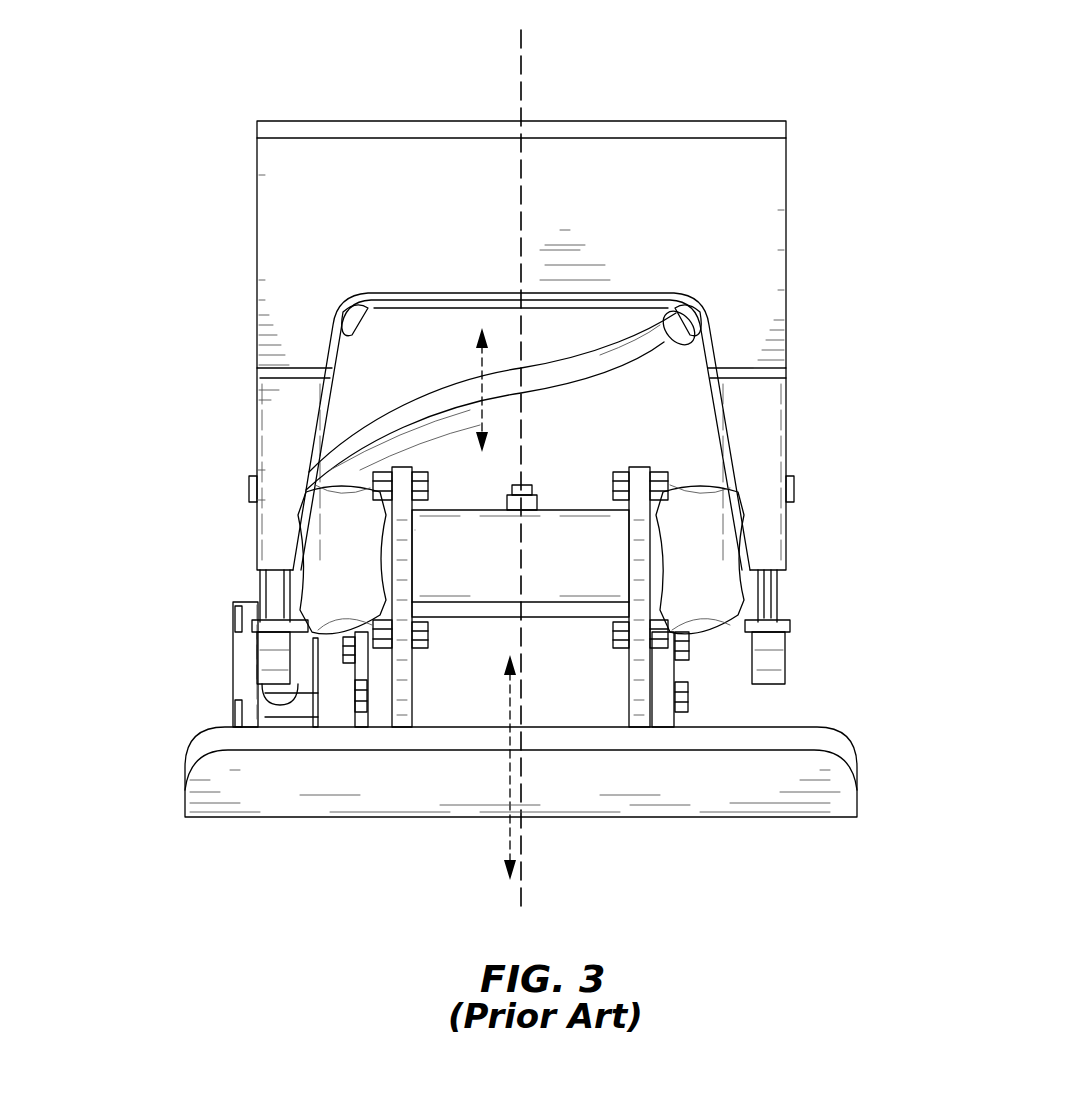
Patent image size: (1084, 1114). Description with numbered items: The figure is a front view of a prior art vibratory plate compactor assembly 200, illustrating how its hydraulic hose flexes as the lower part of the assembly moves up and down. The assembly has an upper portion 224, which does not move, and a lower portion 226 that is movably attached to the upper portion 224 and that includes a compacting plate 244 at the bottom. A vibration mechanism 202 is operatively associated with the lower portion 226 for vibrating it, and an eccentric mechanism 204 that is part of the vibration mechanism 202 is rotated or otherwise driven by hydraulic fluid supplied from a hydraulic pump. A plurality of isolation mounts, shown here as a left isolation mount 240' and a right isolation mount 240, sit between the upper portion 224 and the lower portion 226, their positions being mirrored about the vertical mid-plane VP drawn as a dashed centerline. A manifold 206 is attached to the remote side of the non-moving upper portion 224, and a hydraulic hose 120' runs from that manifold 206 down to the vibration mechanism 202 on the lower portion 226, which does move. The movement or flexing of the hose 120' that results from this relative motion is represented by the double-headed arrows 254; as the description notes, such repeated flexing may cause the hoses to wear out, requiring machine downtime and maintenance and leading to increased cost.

The vertical mid-plane VP is at (521, 63).
The upper portion 224 is at (786, 181).
The vibratory plate compactor assembly 200 is at (786, 321).
The manifold 206 is at (608, 306).
The hydraulic hose 120' is at (503, 397).
The arrows 254 is at (478, 365).
The isolation mount 240' is at (287, 559).
The isolation mount 240 is at (759, 559).
The vibration mechanism 202 is at (233, 652).
The eccentric mechanism 204 is at (442, 648).
The lower portion 226 is at (818, 722).
The compacting plate 244 is at (752, 790).